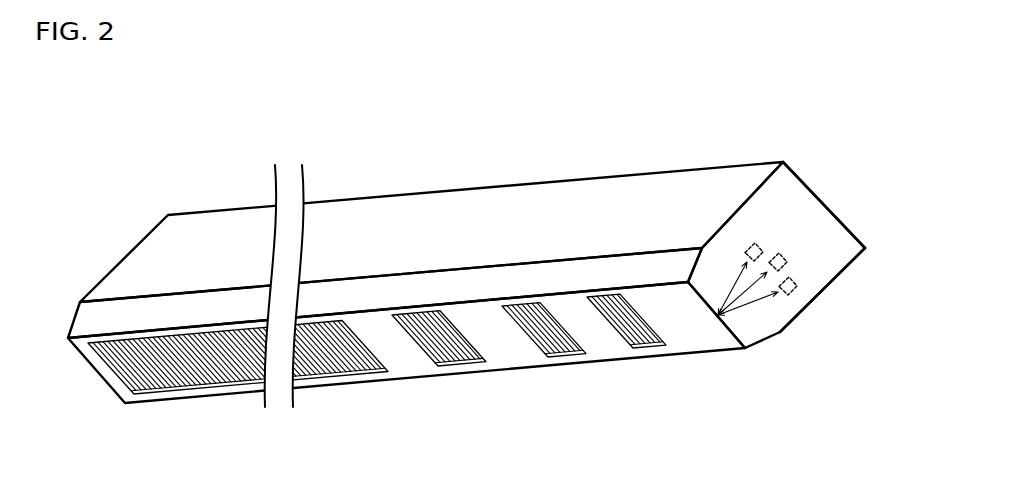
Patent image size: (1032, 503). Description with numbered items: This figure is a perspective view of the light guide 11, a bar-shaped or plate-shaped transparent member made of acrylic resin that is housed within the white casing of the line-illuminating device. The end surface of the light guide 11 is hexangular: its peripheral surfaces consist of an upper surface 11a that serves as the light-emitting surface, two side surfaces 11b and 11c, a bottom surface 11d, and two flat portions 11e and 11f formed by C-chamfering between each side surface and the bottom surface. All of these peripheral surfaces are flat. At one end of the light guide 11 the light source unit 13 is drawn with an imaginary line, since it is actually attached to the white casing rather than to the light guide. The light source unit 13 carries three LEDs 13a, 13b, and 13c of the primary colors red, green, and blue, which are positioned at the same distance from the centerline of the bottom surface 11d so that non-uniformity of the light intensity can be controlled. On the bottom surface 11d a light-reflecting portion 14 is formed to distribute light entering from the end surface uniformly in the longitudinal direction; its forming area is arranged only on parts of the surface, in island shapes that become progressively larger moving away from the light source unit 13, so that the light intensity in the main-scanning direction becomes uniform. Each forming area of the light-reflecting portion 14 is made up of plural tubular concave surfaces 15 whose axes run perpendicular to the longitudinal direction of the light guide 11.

The light guide 11 is at (481, 286).
The upper surface 11a is at (817, 190).
The side surface 11b is at (538, 195).
The side surface 11c is at (812, 308).
The bottom surface 11d is at (593, 335).
The flat portion 11e is at (628, 272).
The flat portion 11f is at (763, 343).
The light source unit 13 is at (807, 214).
The LED 13a is at (751, 245).
The LED 13b is at (780, 254).
The LED 13c is at (798, 285).
The light-reflecting portion 14 is at (377, 380).
The tubular concave surface 15 is at (368, 365).